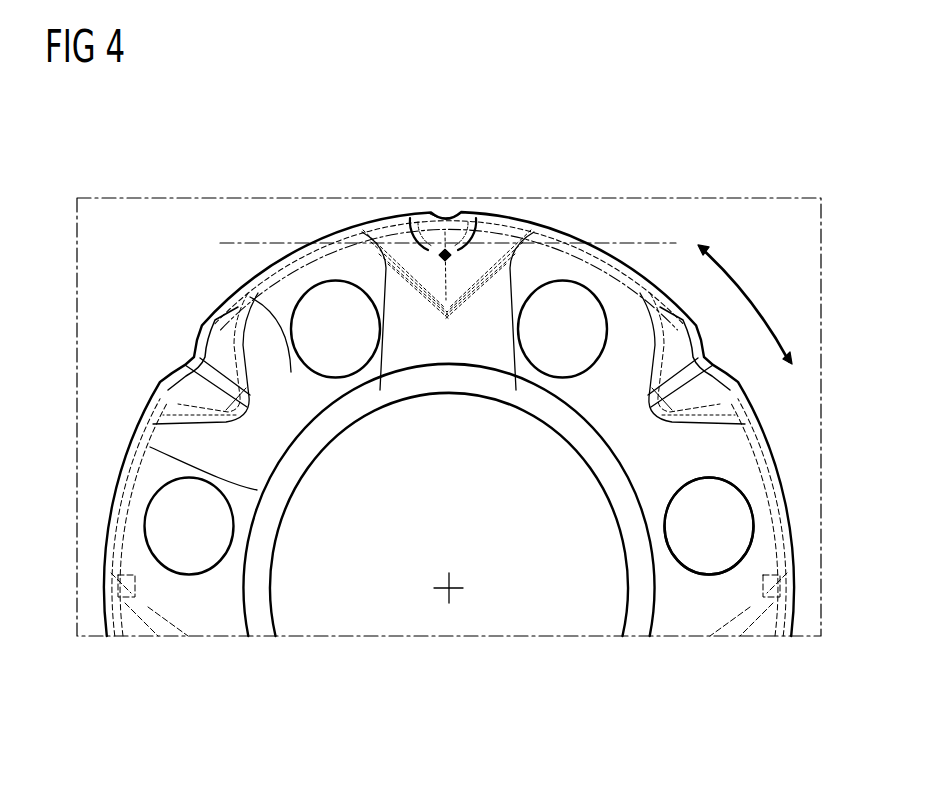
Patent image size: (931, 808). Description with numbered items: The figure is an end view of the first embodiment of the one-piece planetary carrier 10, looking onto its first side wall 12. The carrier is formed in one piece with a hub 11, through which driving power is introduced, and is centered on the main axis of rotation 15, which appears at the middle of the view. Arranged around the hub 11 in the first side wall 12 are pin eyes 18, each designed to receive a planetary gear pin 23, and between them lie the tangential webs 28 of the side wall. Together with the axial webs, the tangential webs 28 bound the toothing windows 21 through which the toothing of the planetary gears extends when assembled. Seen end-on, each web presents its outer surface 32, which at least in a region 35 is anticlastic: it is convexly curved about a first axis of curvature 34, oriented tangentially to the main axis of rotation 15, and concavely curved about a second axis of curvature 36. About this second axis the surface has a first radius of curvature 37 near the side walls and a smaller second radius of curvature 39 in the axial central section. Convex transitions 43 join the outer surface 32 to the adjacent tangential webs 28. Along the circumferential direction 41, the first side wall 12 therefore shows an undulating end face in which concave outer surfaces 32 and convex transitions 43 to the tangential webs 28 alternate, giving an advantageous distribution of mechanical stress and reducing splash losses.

The planetary carrier 10 is at (164, 314).
The hub 11 is at (262, 626).
The first side wall 12 is at (122, 517).
The main axis of rotation 15 is at (450, 588).
The pin eyes 18 is at (710, 552).
The toothing windows 21 is at (312, 243).
The planetary gear pins 23 is at (709, 525).
The tangential webs 28 is at (338, 238).
The outer surface 32 is at (444, 254).
The first axis of curvature 34 is at (673, 243).
The region 35 is at (410, 222).
The second axis of curvature 36 is at (461, 250).
The first radius of curvature 37 is at (447, 312).
The second radius of curvature 39 is at (446, 214).
The circumferential direction 41 is at (751, 293).
The convex transitions 43 is at (380, 390).